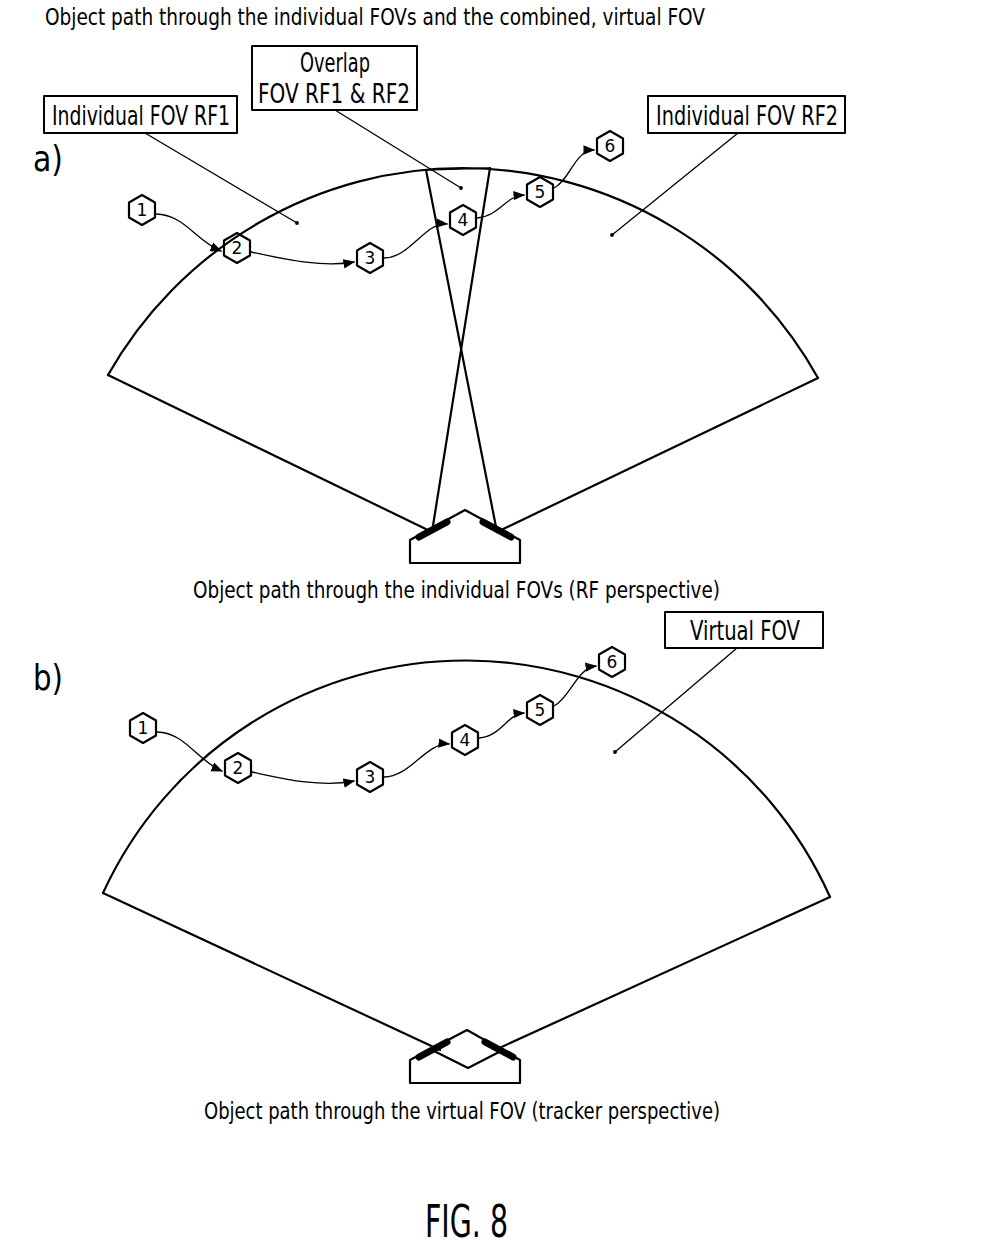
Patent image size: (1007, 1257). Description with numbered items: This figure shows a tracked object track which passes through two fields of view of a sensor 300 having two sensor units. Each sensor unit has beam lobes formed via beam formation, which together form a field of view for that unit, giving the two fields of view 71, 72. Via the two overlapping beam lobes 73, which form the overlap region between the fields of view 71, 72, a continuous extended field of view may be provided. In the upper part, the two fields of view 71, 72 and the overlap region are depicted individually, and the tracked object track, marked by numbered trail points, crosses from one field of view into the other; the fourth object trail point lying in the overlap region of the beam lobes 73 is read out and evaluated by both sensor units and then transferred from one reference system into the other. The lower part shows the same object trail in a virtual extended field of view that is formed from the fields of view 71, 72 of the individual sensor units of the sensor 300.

The field of view 71 is at (135, 295).
The field of view 72 is at (787, 303).
The overlapping beam lobes 73 is at (458, 155).
The sensor 300 is at (527, 553).